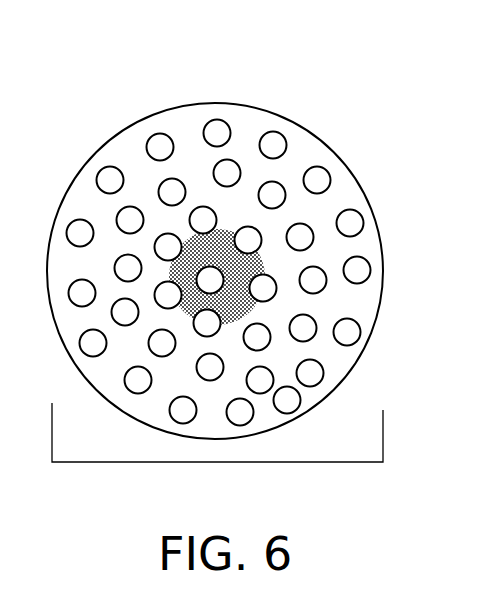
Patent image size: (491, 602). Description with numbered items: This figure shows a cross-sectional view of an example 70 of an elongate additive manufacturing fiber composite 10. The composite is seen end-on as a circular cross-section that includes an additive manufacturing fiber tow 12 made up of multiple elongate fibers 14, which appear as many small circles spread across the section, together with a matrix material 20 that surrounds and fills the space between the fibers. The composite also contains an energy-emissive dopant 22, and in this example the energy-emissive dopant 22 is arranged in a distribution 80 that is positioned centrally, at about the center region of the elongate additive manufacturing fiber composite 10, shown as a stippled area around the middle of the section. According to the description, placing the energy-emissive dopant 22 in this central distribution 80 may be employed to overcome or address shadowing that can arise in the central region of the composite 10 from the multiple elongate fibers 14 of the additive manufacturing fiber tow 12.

The elongate additive manufacturing fiber composite 10 is at (257, 66).
The additive manufacturing fiber tow 12 is at (230, 462).
The elongate fibers 14 is at (207, 135).
The matrix material 20 is at (65, 268).
The energy-emissive dopant 22 is at (213, 237).
The example 70 is at (118, 124).
The distribution 80 is at (273, 259).